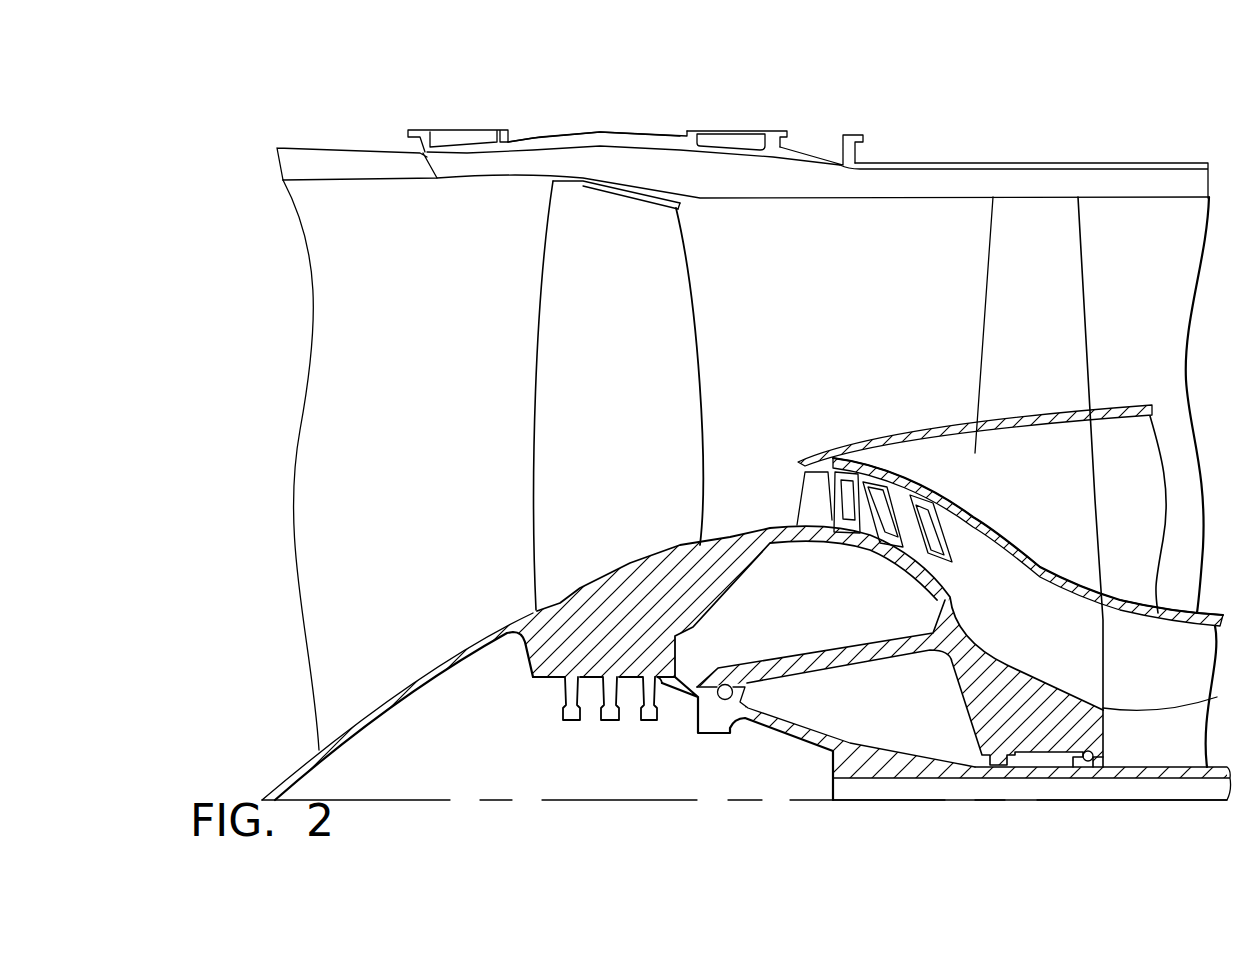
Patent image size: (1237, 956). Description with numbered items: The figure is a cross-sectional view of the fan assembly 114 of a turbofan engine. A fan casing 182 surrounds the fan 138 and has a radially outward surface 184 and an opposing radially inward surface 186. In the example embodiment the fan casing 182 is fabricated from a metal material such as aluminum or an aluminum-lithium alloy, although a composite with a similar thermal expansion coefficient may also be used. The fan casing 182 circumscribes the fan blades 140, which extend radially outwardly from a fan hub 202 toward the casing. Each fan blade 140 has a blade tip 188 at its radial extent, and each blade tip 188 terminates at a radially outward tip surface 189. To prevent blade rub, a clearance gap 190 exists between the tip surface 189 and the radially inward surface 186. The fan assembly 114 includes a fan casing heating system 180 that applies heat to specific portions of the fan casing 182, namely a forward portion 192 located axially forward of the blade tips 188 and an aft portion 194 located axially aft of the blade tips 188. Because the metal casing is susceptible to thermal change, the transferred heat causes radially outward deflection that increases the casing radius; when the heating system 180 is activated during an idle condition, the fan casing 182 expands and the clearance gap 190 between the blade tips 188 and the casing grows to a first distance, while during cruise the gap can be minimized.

The fan assembly 114 is at (453, 310).
The fan 138 is at (513, 585).
The fan blade 140 is at (641, 447).
The fan casing heating system 180 is at (546, 118).
The fan casing 182 is at (603, 132).
The radially outward surface 184 is at (907, 160).
The radially inward surface 186 is at (847, 202).
The blade tip 188 is at (572, 240).
The tip surface 189 is at (583, 185).
The clearance gap 190 is at (682, 203).
The forward portion 192 is at (477, 120).
The aft portion 194 is at (742, 125).
The fan hub 202 is at (533, 612).